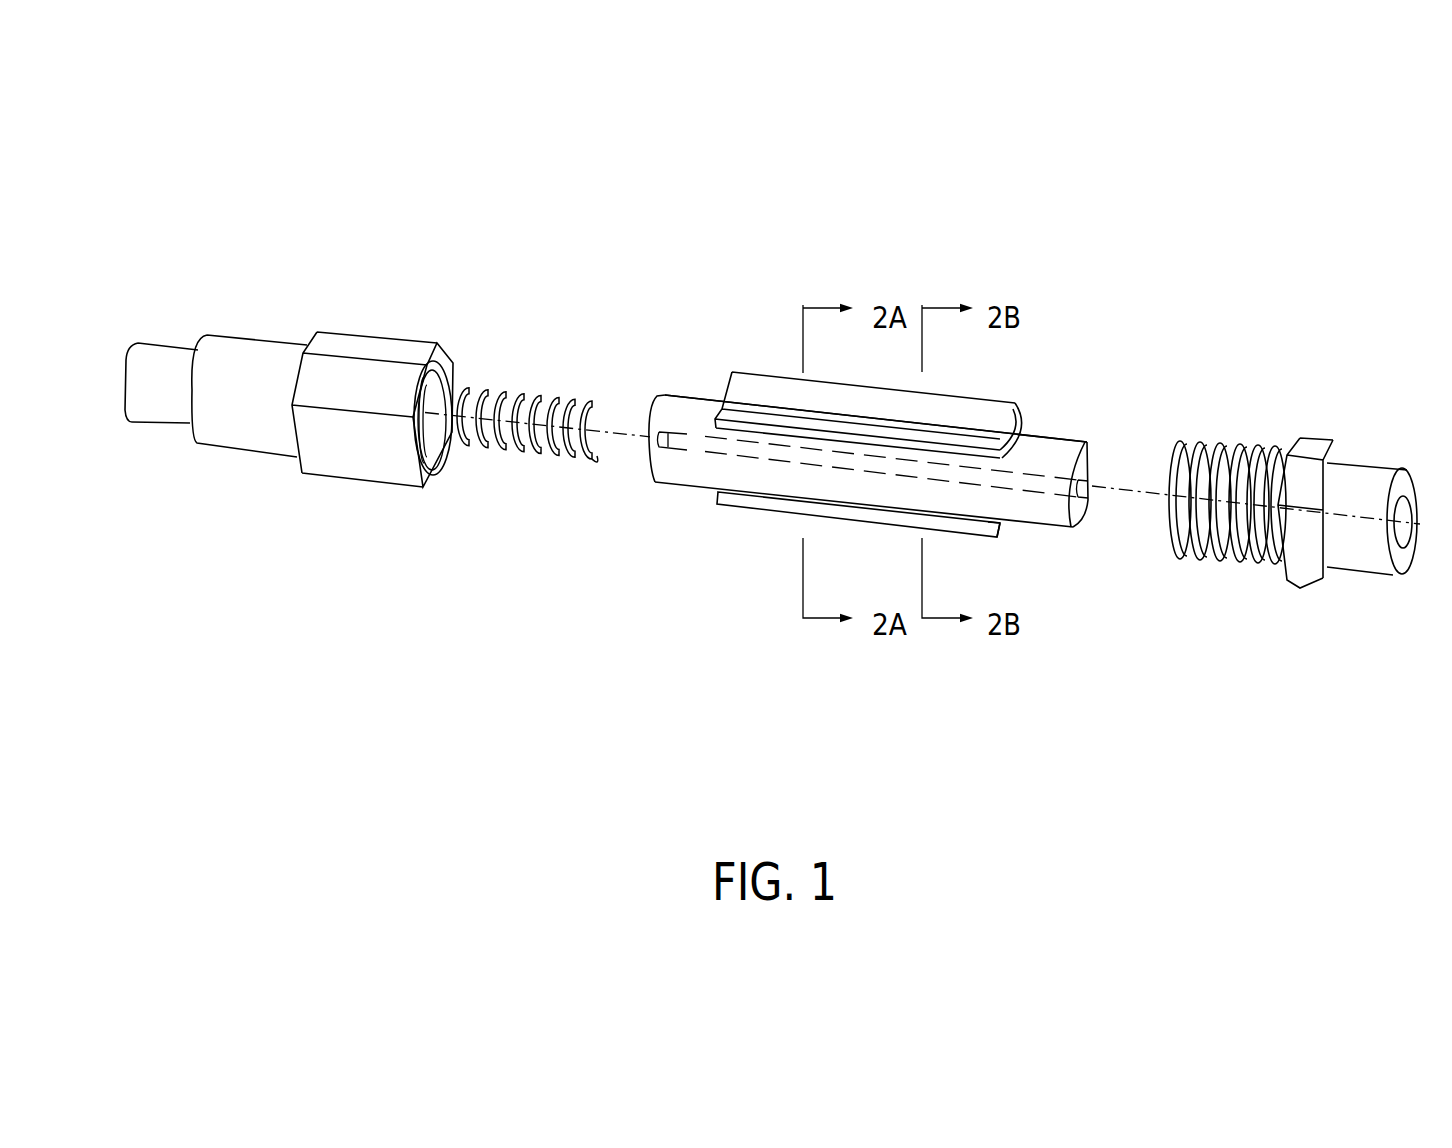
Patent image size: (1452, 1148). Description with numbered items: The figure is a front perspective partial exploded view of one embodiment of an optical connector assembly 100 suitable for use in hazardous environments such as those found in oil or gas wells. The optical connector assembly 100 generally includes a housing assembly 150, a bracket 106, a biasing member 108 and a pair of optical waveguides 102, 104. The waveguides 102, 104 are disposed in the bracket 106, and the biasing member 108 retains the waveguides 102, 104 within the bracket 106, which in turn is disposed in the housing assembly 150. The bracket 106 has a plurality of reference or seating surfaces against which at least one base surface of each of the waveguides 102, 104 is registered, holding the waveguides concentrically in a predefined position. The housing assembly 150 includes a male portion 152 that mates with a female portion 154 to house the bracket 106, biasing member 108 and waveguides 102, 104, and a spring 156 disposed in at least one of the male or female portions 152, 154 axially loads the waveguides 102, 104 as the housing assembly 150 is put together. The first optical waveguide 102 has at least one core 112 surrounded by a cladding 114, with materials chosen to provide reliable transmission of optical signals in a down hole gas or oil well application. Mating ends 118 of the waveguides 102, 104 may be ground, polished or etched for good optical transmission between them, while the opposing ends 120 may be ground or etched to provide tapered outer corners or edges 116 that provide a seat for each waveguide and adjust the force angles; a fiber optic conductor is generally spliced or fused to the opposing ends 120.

The optical connector assembly 100 is at (1060, 352).
The first optical waveguide 102 is at (690, 500).
The second optical waveguide 104 is at (1018, 546).
The bracket 106 is at (778, 525).
The biasing member 108 is at (732, 372).
The core 112 is at (691, 430).
The cladding 114 is at (666, 394).
The tapered edges 116 is at (654, 396).
The mating ends 118 is at (860, 452).
The opposing ends 120 is at (634, 474).
The housing assembly 150 is at (383, 313).
The male portion 152 is at (1323, 585).
The female portion 154 is at (385, 471).
The spring 156 is at (522, 378).